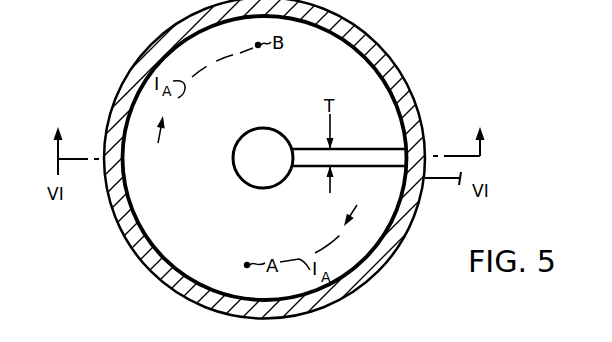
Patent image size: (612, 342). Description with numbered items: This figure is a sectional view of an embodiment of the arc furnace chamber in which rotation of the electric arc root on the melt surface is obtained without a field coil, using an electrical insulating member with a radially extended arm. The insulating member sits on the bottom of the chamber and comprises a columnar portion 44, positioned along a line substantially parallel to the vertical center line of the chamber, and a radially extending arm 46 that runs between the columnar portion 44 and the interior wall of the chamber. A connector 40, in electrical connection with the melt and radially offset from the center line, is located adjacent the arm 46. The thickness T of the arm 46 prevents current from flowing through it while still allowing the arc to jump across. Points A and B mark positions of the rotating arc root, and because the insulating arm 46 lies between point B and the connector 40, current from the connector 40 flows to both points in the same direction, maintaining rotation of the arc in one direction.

The connector 40 is at (392, 179).
The columnar portion 44 is at (240, 181).
The radially extending arm 46 is at (355, 149).